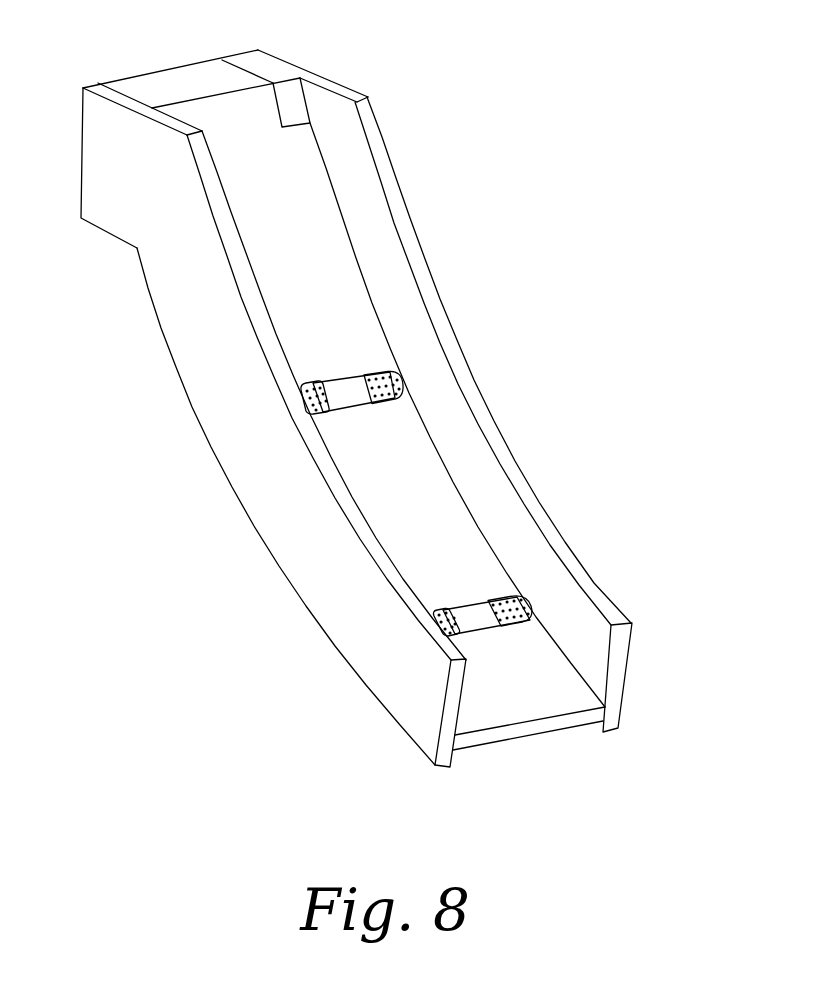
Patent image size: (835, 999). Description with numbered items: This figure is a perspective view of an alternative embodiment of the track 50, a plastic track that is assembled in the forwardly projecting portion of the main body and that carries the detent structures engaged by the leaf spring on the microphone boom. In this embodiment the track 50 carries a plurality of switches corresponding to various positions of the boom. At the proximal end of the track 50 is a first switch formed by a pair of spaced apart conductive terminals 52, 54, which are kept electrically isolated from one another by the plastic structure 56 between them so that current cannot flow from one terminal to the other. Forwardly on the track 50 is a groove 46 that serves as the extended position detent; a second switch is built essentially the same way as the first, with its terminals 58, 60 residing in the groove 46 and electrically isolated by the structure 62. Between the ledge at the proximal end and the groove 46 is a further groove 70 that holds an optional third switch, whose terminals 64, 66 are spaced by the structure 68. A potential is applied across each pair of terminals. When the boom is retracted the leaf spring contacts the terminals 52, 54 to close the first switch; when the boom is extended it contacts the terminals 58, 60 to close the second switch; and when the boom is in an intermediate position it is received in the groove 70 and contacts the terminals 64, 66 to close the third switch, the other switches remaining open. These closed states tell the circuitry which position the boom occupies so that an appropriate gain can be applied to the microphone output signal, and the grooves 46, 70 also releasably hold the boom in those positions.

The groove 46 is at (472, 607).
The track 50 is at (406, 219).
The conductive terminal 52 is at (130, 88).
The conductive terminal 54 is at (269, 68).
The structure 56 is at (197, 72).
The terminal 58 is at (435, 612).
The terminal 60 is at (522, 603).
The structure 62 is at (483, 630).
The terminal 64 is at (302, 388).
The terminal 66 is at (402, 377).
The structure 68 is at (342, 385).
The groove 70 is at (355, 402).